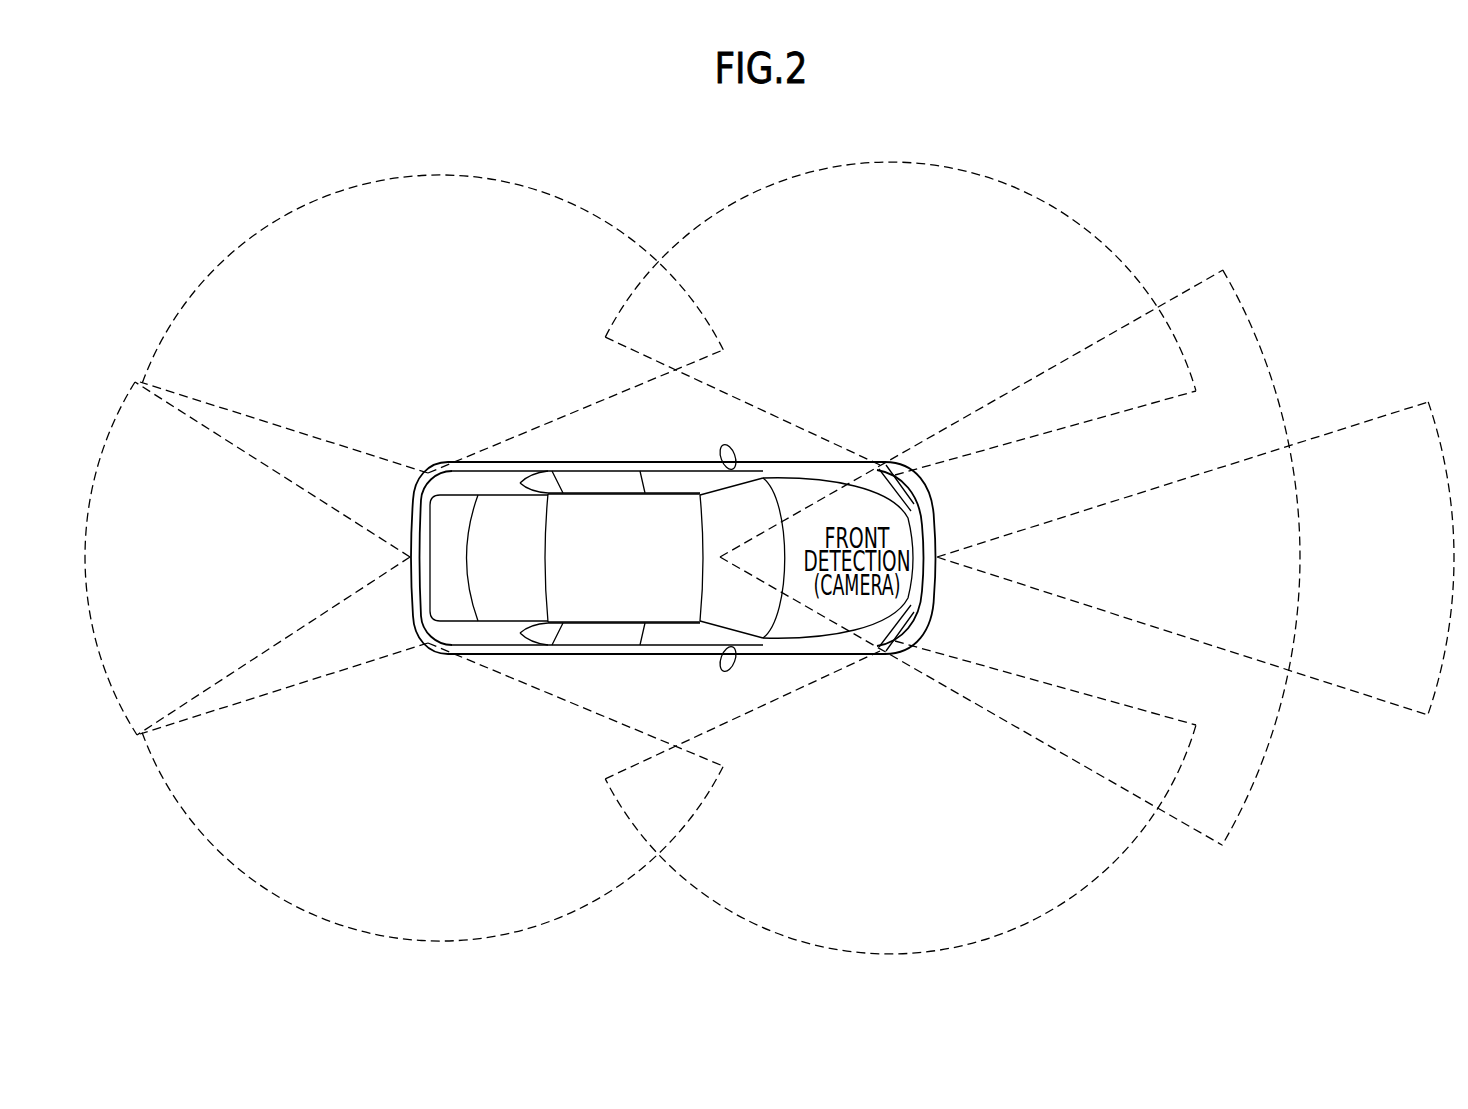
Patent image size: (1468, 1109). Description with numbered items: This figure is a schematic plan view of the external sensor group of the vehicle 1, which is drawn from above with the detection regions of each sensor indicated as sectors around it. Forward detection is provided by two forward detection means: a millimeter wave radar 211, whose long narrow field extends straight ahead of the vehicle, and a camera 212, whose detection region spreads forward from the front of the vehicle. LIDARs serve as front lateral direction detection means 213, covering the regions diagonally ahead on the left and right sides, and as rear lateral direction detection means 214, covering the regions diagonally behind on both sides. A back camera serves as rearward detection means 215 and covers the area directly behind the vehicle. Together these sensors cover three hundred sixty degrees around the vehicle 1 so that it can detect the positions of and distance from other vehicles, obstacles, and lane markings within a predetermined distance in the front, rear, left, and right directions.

The vehicle 1 is at (632, 531).
The forward detection means (millimeter wave radar) 211 is at (1428, 402).
The forward detection means (camera) 212 is at (1256, 332).
The front lateral direction detection means 213 is at (1068, 213).
The rear lateral direction detection means 214 is at (247, 242).
The rearward detection means 215 is at (120, 403).